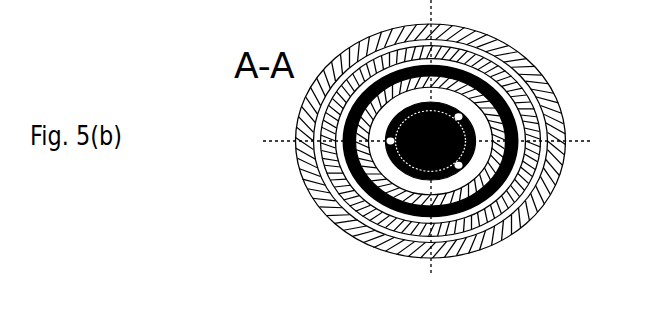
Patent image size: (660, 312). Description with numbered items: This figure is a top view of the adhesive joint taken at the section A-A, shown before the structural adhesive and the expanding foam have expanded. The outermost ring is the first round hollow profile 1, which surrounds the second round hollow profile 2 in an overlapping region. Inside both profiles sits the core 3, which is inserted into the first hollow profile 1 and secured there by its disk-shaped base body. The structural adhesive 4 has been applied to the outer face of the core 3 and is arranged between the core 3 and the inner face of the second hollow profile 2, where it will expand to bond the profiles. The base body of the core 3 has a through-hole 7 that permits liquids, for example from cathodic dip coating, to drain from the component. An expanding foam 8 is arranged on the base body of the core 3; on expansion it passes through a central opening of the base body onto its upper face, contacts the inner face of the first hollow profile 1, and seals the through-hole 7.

The first round hollow profile 1 is at (510, 235).
The second round hollow profile 2 is at (530, 192).
The core 3 is at (497, 125).
The structural adhesive 4 is at (508, 103).
The through-hole 7 is at (392, 141).
The expanding foam 8 is at (400, 165).